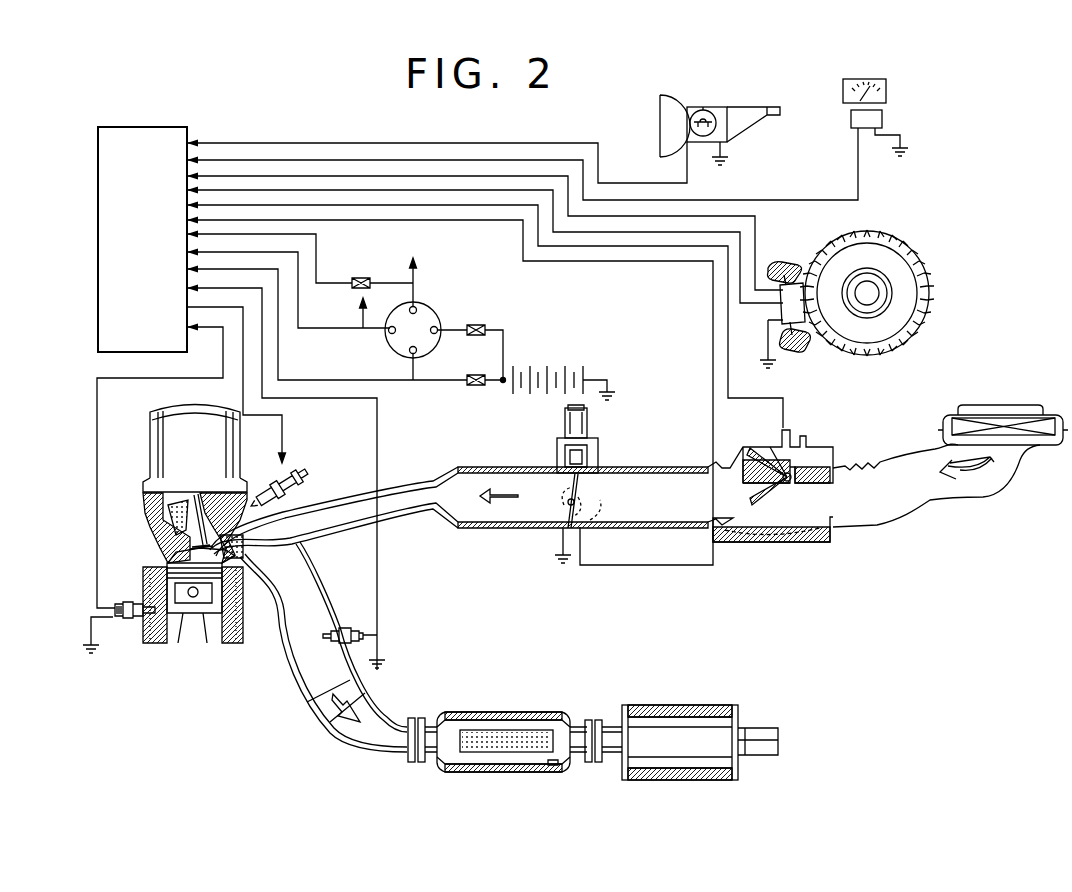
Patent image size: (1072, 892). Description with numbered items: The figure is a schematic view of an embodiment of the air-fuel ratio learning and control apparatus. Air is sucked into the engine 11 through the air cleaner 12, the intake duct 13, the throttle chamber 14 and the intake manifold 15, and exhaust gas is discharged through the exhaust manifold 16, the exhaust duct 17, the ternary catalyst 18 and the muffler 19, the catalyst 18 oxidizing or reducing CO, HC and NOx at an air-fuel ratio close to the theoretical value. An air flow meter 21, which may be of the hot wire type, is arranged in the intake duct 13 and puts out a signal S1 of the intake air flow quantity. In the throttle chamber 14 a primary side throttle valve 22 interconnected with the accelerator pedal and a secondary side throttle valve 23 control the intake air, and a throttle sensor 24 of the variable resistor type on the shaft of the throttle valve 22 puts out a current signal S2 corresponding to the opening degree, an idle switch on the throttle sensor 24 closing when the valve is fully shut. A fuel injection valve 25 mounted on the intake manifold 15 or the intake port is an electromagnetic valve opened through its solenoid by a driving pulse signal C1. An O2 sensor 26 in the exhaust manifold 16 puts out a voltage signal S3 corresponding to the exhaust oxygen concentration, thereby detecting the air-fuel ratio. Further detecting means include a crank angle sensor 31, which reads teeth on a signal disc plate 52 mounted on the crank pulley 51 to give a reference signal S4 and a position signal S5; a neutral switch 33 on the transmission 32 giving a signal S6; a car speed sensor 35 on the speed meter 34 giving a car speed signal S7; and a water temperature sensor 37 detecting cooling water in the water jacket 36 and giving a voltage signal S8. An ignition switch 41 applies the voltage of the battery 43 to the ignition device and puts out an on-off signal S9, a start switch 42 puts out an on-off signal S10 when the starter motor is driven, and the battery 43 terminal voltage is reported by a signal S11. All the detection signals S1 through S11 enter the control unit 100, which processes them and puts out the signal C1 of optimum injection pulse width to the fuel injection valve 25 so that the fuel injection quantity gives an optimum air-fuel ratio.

The control unit 100 is at (160, 127).
The engine 11 is at (147, 444).
The air cleaner 12 is at (1009, 405).
The intake duct 13 is at (863, 528).
The throttle chamber 14 is at (507, 528).
The intake manifold 15 is at (399, 523).
The exhaust manifold 16 is at (292, 682).
The exhaust duct 17 is at (398, 719).
The ternary catalyst 18 is at (523, 712).
The muffler 19 is at (703, 705).
The air flow meter 21 is at (757, 442).
The primary side throttle valve 22 is at (570, 528).
The secondary side throttle valve 23 is at (590, 481).
The throttle sensor 24 is at (602, 524).
The fuel injection valve 25 is at (308, 469).
The O2 sensor 26 is at (347, 627).
The crank angle sensor 31 is at (792, 268).
The transmission 32 is at (725, 117).
The neutral switch 33 is at (697, 107).
The speed meter 34 is at (886, 91).
The car speed sensor 35 is at (882, 119).
The water jacket 36 is at (157, 633).
The water temperature sensor 37 is at (126, 643).
The ignition switch 41 is at (417, 305).
The start switch 42 is at (393, 337).
The battery 43 is at (557, 367).
The crank pulley 51 is at (900, 270).
The signal disc plate 52 is at (887, 238).
The intake air flow quantity signal S1 is at (750, 401).
The throttle opening signal S2 is at (673, 568).
The oxygen concentration voltage signal S3 is at (377, 598).
The reference signal S4 is at (758, 305).
The position signal S5 is at (768, 264).
The neutral signal S6 is at (635, 183).
The car speed signal S7 is at (820, 200).
The water temperature voltage signal S8 is at (95, 553).
The ignition on-off signal S9 is at (387, 282).
The start on-off signal S10 is at (326, 329).
The battery voltage signal S11 is at (307, 380).
The driving pulse signal C1 is at (250, 415).